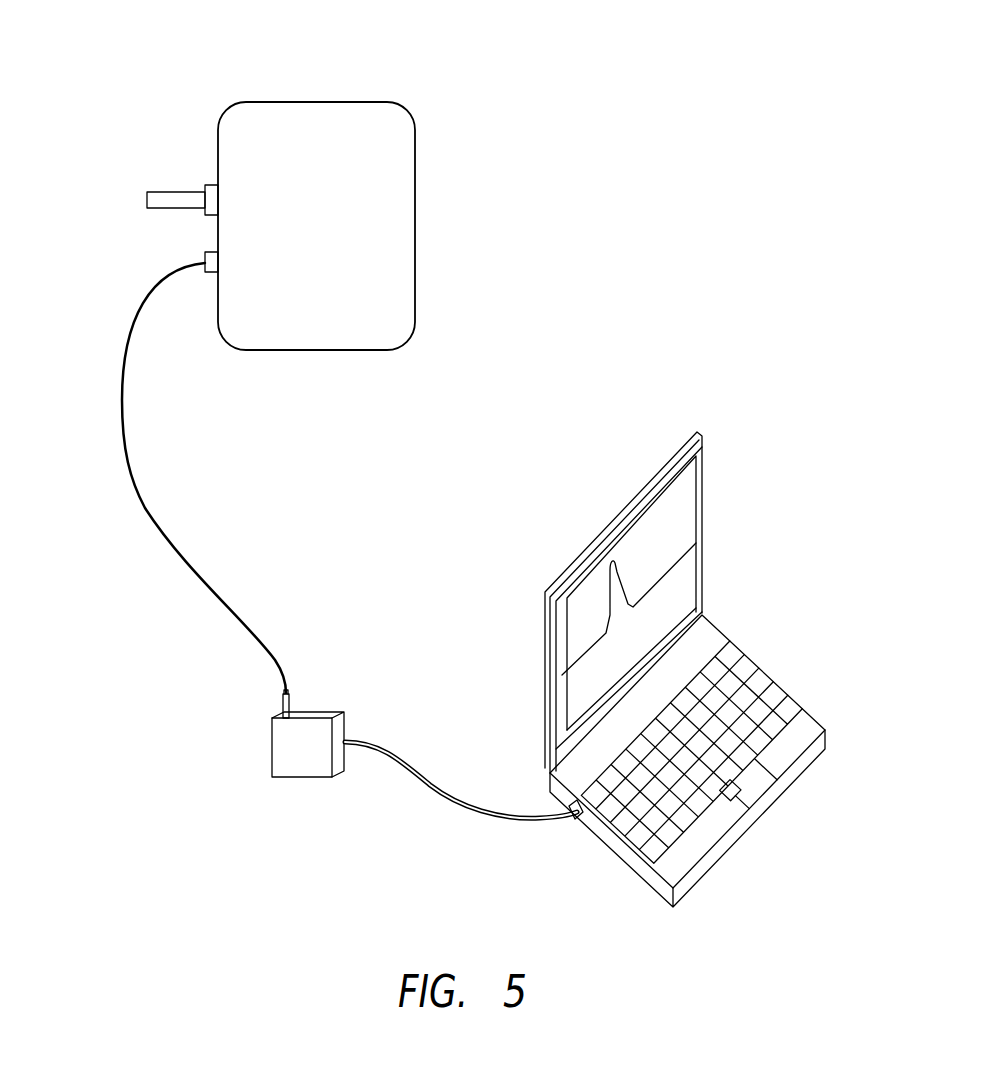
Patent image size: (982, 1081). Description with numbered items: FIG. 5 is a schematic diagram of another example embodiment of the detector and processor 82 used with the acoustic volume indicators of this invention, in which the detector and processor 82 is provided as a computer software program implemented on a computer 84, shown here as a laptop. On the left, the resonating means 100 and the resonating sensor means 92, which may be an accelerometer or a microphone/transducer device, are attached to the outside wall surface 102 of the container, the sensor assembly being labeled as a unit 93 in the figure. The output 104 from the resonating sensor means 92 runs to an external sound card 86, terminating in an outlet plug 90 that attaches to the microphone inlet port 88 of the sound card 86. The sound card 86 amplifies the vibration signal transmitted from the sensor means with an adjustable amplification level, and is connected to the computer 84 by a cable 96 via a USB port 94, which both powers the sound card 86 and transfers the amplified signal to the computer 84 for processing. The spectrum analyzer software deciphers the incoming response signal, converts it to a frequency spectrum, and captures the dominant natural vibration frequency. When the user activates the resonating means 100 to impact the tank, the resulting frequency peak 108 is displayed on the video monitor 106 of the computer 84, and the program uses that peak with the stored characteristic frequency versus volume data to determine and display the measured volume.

The detector and processor 82 is at (702, 644).
The computer 84 is at (797, 725).
The sound card 86 is at (271, 718).
The microphone inlet port 88 is at (317, 714).
The outlet plug 90 is at (283, 703).
The resonating sensor means 92 is at (204, 260).
The sensor device 93 is at (278, 177).
The USB port 94 is at (575, 820).
The cable 96 is at (463, 810).
The resonating means 100 is at (177, 190).
The outside wall surface 102 is at (218, 136).
The output 104 is at (128, 433).
The video monitor 106 is at (649, 577).
The frequency peak 108 is at (622, 583).